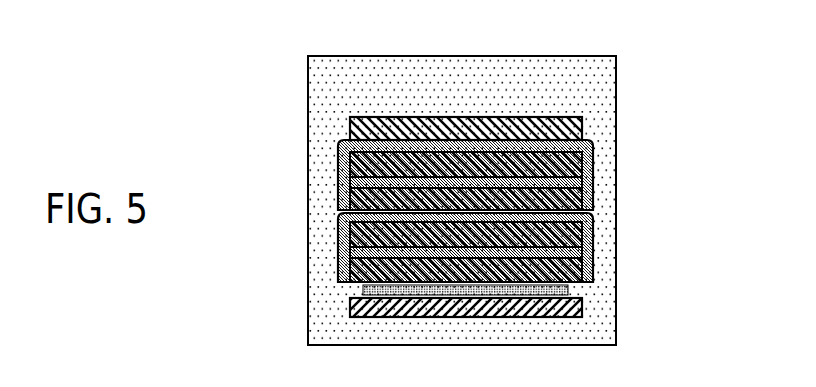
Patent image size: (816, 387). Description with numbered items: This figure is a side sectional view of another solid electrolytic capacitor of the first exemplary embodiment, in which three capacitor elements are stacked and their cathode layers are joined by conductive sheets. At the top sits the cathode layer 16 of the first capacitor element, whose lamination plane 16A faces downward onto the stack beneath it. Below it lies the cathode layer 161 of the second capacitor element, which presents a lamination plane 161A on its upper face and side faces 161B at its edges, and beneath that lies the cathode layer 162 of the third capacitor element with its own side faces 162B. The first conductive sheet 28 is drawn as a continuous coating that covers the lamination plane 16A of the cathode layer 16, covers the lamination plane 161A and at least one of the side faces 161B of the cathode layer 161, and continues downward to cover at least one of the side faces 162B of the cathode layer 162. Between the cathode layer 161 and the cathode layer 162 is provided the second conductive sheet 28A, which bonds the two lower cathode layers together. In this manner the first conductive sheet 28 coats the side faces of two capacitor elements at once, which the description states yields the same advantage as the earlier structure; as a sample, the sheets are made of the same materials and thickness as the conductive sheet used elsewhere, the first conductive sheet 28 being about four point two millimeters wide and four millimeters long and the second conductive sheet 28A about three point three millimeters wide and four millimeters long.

The cathode layer 16 is at (581, 128).
The lamination plane 16A is at (352, 132).
The first conductive sheet 28 is at (537, 177).
The second conductive sheet 28A is at (468, 177).
The cathode layer 161 is at (477, 121).
The lamination plane 161A is at (357, 155).
The side face 161B is at (348, 170).
The cathode layer 162 is at (477, 242).
The side face 162B is at (344, 214).